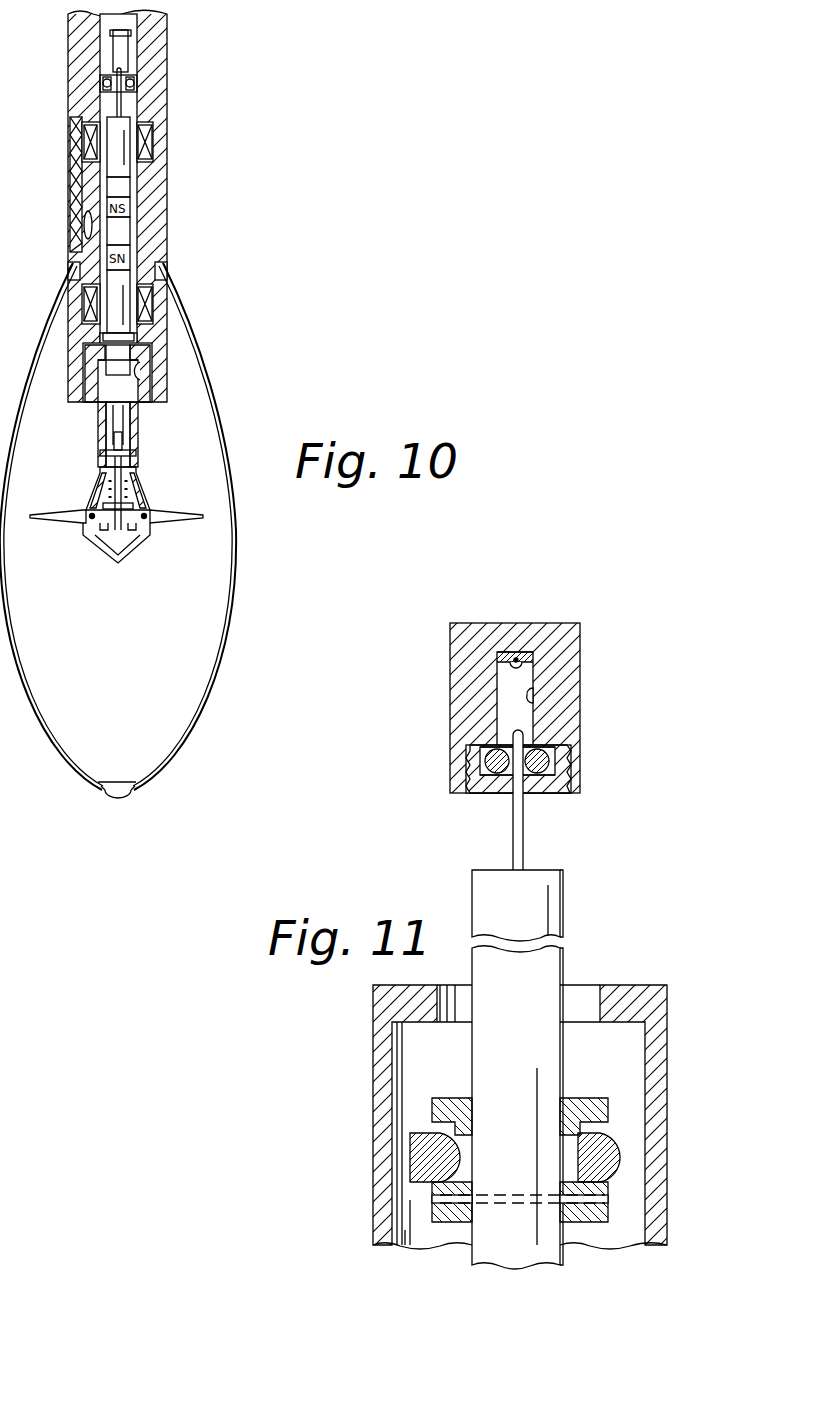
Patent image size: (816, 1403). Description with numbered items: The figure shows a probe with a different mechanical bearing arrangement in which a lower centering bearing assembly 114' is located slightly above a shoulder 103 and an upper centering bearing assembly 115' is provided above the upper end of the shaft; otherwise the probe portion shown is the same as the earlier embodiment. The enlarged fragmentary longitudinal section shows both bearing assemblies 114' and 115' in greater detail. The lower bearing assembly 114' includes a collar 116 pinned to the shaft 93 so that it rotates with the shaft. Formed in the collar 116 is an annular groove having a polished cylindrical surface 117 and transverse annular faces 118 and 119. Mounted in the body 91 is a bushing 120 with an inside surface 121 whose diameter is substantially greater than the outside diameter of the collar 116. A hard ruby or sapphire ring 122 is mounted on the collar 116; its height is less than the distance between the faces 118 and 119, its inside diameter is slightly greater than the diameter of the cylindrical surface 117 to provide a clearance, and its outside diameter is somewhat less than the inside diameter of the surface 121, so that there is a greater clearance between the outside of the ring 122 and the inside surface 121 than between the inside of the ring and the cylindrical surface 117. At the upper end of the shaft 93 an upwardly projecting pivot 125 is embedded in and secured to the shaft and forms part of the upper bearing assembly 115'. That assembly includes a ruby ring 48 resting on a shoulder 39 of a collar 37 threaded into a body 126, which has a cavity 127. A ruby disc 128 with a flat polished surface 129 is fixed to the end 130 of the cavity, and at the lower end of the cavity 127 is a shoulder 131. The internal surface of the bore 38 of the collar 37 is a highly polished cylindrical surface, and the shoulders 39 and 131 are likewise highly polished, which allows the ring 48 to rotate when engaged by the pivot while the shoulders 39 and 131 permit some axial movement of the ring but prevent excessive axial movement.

In FIG. 10, the body 91 is at (158, 176).
In FIG. 10, the upper centering bearing assembly 115' is at (170, 63).
In FIG. 11, the upper centering bearing assembly 115' is at (519, 940).
In FIG. 10, the lower centering bearing assembly 114' is at (191, 313).
In FIG. 11, the lower centering bearing assembly 114' is at (497, 940).
In FIG. 10, the shoulder 103 is at (140, 362).
In FIG. 11, the body 126 is at (436, 650).
In FIG. 11, the cavity 127 is at (535, 702).
In FIG. 11, the ruby disc 128 is at (520, 662).
In FIG. 11, the flat polished surface 129 is at (516, 648).
In FIG. 11, the end of the cavity 130 is at (515, 655).
In FIG. 11, the shoulder 131 is at (550, 752).
In FIG. 11, the ruby ring 48 is at (493, 762).
In FIG. 11, the bore 38 is at (548, 762).
In FIG. 11, the collar 37 is at (485, 785).
In FIG. 11, the shoulder 39 is at (535, 785).
In FIG. 11, the pivot 125 is at (525, 845).
In FIG. 11, the shaft 93 is at (560, 905).
In FIG. 11, the polished cylindrical surface 117 is at (580, 1130).
In FIG. 11, the transverse annular face 118 is at (612, 1120).
In FIG. 11, the transverse annular face 119 is at (608, 1175).
In FIG. 11, the collar 116 is at (455, 1222).
In FIG. 11, the bushing 120 is at (385, 1175).
In FIG. 11, the inside surface 121 is at (403, 1245).
In FIG. 11, the hard ruby or sapphire ring 122 is at (420, 1150).